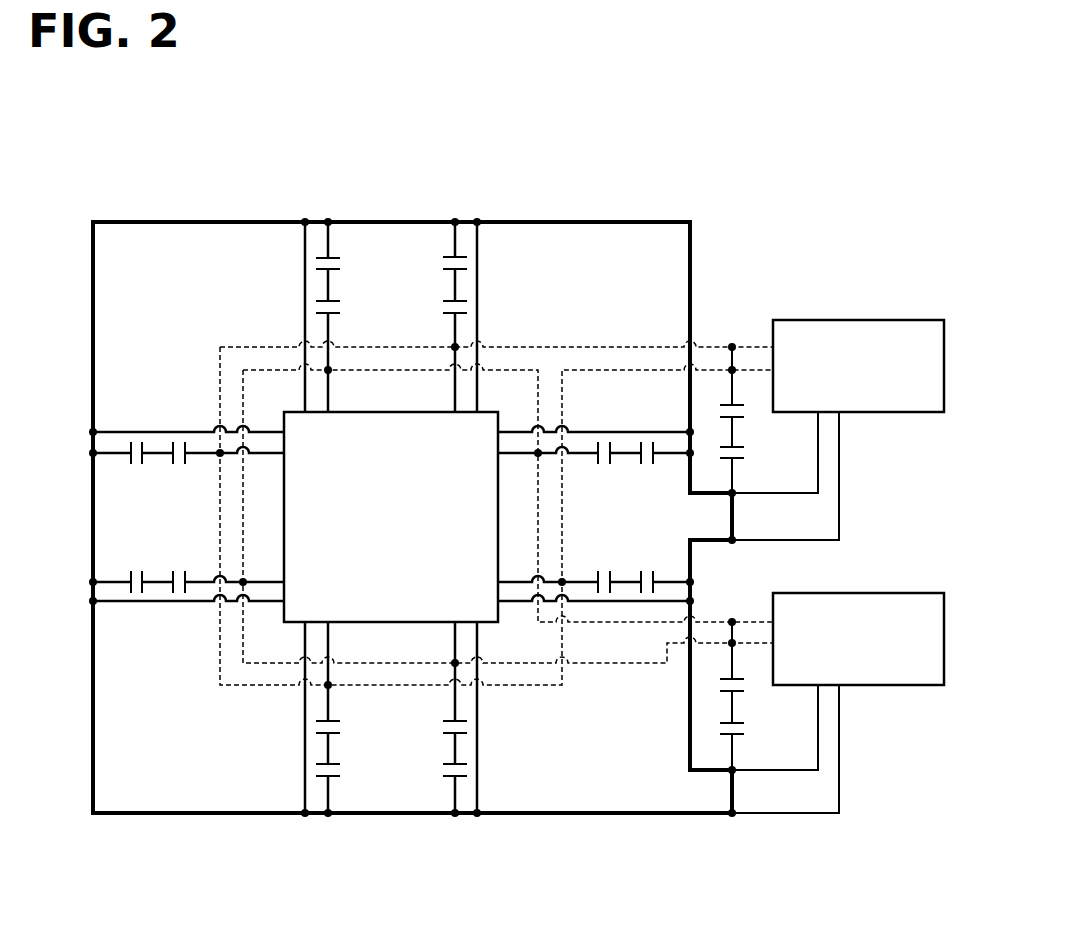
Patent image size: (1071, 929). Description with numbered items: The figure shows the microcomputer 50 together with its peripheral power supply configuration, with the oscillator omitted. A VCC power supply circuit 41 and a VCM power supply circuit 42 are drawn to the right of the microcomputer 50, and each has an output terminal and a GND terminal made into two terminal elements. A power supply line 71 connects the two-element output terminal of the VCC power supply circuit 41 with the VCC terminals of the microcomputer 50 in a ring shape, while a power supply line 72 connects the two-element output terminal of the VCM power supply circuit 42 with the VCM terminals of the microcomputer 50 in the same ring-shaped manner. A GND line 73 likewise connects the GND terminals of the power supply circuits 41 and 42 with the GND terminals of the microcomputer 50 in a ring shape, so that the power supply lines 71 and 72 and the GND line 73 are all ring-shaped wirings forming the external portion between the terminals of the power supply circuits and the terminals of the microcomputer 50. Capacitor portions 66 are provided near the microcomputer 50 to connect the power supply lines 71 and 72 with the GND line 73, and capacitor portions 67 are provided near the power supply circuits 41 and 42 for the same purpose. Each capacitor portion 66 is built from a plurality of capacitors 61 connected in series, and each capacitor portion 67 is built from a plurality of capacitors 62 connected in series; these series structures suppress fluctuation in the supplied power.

The VCC power supply circuit 41 is at (890, 591).
The VCM power supply circuit 42 is at (890, 318).
The microcomputer 50 is at (282, 612).
The capacitor 61 is at (342, 270).
The capacitor 62 is at (746, 417).
The capacitor portion 66 is at (340, 248).
The capacitor portion 67 is at (722, 396).
The power supply line 71 is at (606, 665).
The power supply line 72 is at (582, 345).
The GND line 73 is at (584, 816).